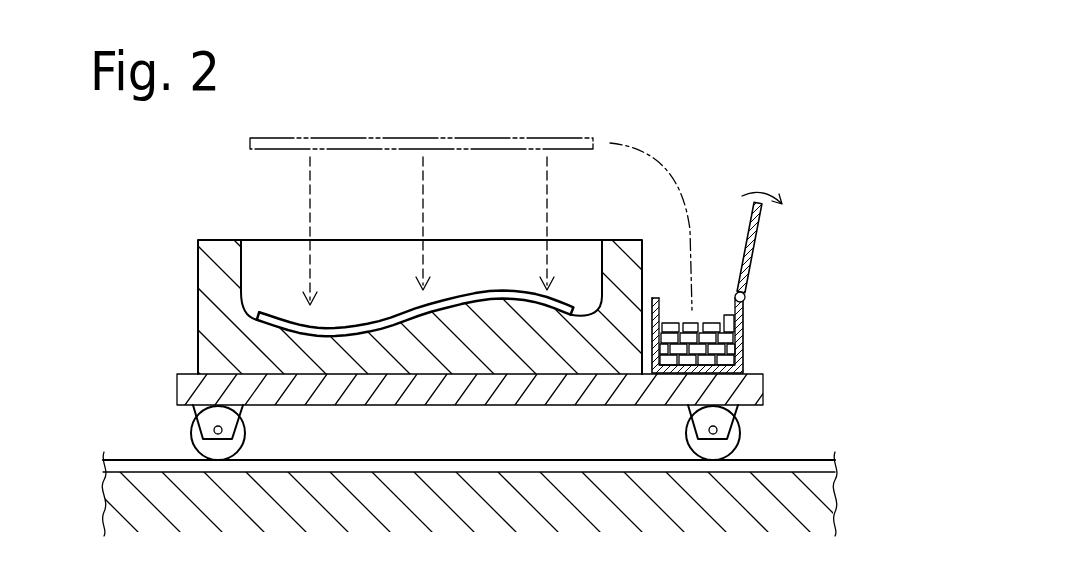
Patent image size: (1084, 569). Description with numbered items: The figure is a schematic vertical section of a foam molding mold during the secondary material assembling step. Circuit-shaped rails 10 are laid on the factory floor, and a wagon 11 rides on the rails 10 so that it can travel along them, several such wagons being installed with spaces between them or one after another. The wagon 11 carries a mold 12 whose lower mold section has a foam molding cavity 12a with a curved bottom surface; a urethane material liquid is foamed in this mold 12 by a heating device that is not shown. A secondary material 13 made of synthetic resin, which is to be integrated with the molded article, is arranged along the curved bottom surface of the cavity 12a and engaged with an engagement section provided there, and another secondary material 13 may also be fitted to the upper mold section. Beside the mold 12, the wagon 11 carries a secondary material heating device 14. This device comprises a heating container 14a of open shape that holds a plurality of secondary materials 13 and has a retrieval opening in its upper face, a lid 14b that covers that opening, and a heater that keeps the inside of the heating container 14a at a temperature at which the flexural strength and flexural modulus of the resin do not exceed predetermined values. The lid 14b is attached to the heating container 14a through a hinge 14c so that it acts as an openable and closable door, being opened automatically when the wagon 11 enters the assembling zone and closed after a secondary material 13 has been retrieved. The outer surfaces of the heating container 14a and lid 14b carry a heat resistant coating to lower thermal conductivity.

The rails 10 is at (418, 460).
The wagon 11 is at (177, 373).
The mold 12 is at (198, 290).
The foam molding cavity 12a is at (240, 273).
The secondary material 13 is at (440, 138).
The secondary material heating device 14 is at (784, 282).
The heating container 14a is at (744, 345).
The lid 14b is at (760, 230).
The hinge 14c is at (746, 297).